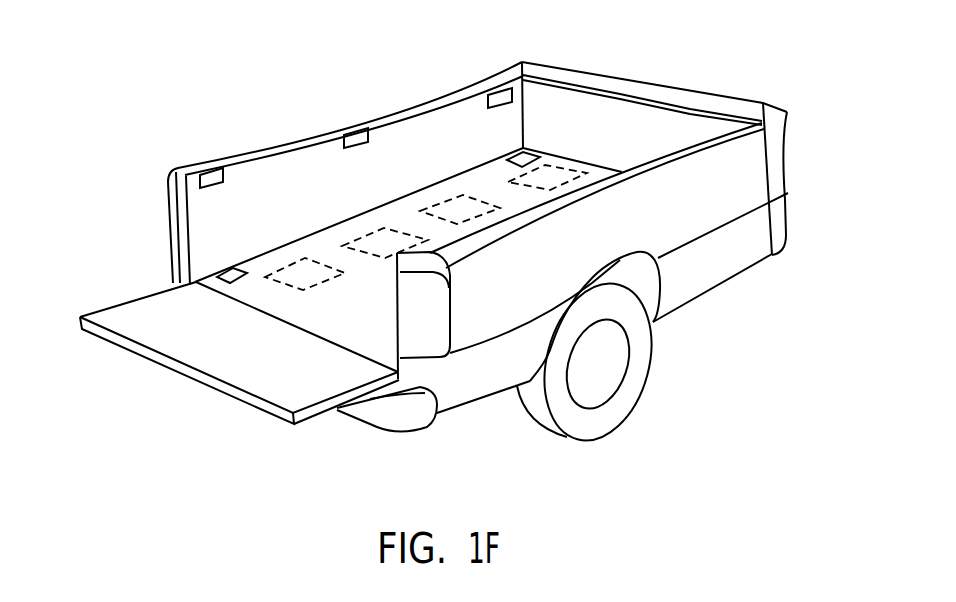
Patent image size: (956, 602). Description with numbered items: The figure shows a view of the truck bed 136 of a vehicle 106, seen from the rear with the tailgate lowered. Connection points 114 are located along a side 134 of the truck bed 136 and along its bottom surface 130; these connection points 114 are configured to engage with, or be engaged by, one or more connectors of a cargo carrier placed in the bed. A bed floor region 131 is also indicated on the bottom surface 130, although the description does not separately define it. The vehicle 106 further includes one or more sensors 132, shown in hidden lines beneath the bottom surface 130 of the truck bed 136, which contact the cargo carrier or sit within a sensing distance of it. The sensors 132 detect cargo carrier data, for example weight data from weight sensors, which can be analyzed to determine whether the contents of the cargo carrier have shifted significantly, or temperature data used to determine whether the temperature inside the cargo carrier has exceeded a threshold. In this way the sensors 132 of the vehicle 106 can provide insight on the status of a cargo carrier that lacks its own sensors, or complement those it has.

The vehicle 106 is at (717, 275).
The connection points 114 is at (213, 174).
The bottom surface 130 is at (364, 333).
The bed floor 131 is at (386, 278).
The sensors 132 is at (372, 234).
The side 134 is at (518, 123).
The truck bed 136 is at (603, 166).